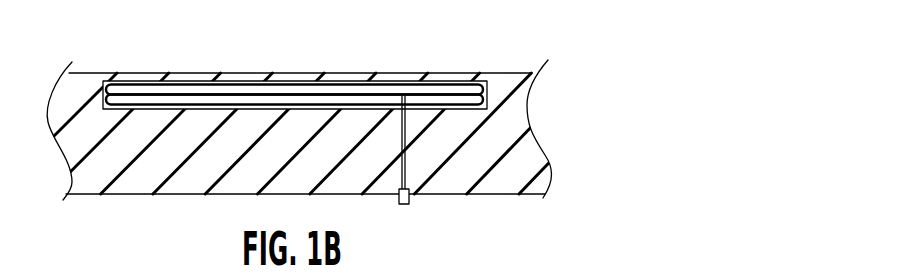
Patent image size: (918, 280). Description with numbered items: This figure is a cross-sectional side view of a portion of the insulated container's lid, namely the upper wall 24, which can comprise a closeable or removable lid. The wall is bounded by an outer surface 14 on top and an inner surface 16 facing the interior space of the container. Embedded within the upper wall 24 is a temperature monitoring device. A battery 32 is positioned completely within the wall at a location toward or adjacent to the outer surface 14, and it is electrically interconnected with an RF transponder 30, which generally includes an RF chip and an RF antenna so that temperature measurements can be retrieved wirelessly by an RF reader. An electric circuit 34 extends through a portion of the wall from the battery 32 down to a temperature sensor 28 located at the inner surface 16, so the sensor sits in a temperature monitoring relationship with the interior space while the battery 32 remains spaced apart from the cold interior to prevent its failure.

The outer surface 14 is at (228, 72).
The inner surface 16 is at (133, 195).
The upper wall 24 is at (523, 101).
The temperature sensor 28 is at (405, 205).
The RF transponder 30 is at (102, 92).
The battery 32 is at (135, 85).
The electric circuit 34 is at (411, 150).